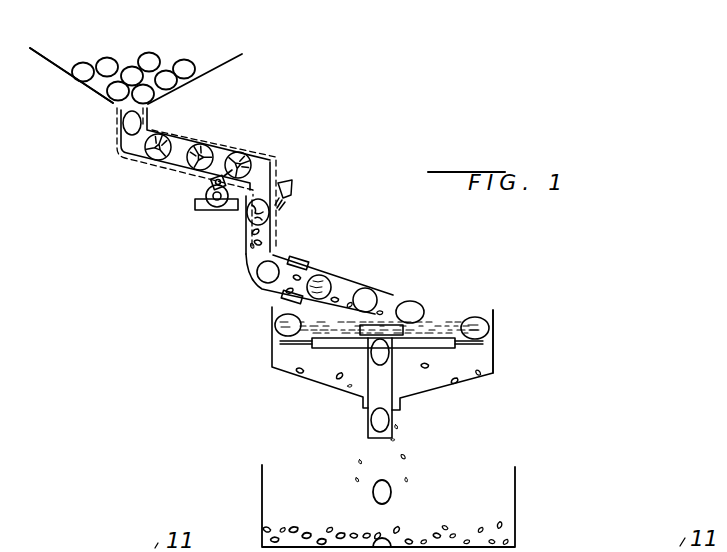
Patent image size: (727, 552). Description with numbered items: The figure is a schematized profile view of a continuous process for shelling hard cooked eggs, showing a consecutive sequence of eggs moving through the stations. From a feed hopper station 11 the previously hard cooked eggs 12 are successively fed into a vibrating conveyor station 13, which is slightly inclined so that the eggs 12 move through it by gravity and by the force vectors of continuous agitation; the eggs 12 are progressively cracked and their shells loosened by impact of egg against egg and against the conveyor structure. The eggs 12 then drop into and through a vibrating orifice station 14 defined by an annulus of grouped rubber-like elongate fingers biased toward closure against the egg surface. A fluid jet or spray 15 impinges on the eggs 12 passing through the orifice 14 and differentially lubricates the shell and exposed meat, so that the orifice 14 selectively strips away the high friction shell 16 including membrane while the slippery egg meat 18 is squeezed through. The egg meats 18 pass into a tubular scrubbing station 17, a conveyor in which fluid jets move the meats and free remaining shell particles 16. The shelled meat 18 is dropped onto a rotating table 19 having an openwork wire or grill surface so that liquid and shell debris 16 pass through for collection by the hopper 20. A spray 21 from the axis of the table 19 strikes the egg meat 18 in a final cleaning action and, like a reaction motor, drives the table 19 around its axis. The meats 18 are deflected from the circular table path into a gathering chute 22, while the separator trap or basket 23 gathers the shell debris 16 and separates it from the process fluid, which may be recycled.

The feed hopper station 11 is at (234, 84).
The hard cooked eggs 12 is at (77, 79).
The vibrating conveyor station 13 is at (297, 143).
The vibrating orifice station 14 is at (228, 231).
The fluid jet or spray 15 is at (303, 203).
The shell 16 is at (271, 238).
The tubular scrubbing station 17 is at (252, 304).
The egg meat 18 is at (260, 280).
The rotating platform stage or table 19 is at (288, 365).
The hopper 20 is at (495, 348).
The spray 21 is at (459, 305).
The gathering chute 22 is at (375, 383).
The separator trap or basket 23 is at (517, 467).